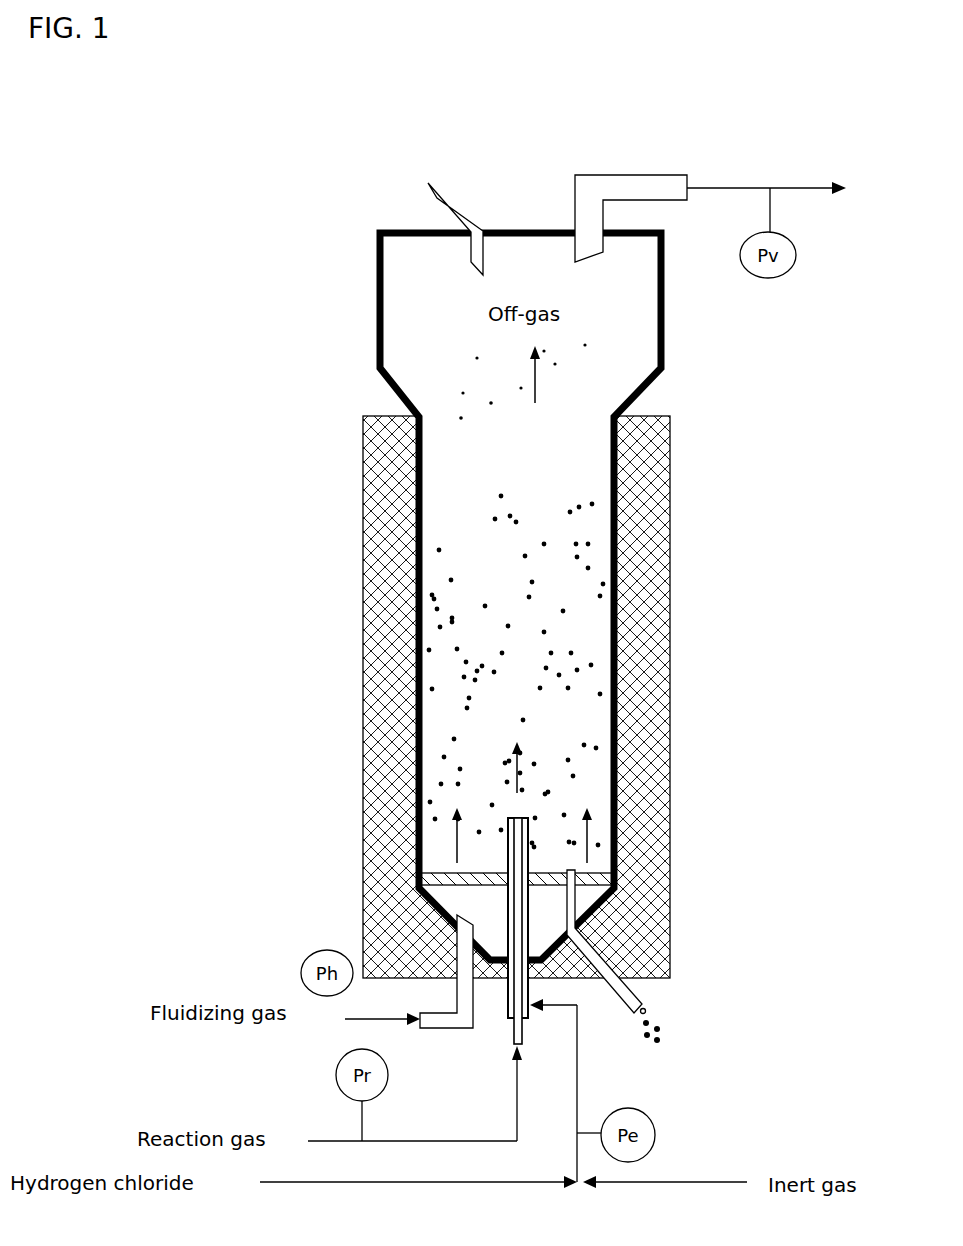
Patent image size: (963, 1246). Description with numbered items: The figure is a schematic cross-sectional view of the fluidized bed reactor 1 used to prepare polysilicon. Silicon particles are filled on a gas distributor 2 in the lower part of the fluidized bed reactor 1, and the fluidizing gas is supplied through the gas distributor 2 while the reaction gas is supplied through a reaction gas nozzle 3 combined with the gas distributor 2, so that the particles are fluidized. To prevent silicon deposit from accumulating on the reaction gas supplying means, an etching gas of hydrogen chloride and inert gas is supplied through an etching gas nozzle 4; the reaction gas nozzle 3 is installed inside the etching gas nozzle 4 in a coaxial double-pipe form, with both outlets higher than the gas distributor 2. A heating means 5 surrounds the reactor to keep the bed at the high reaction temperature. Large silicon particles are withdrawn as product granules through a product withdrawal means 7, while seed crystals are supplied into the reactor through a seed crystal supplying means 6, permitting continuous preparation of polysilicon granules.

The fluidized bed reactor 1 is at (617, 556).
The gas distributor 2 is at (440, 877).
The reaction gas nozzle 3 is at (523, 1027).
The etching gas nozzle 4 is at (530, 847).
The heating means 5 is at (385, 682).
The seed crystal supplying means 6 is at (430, 188).
The product withdrawal means 7 is at (637, 1002).